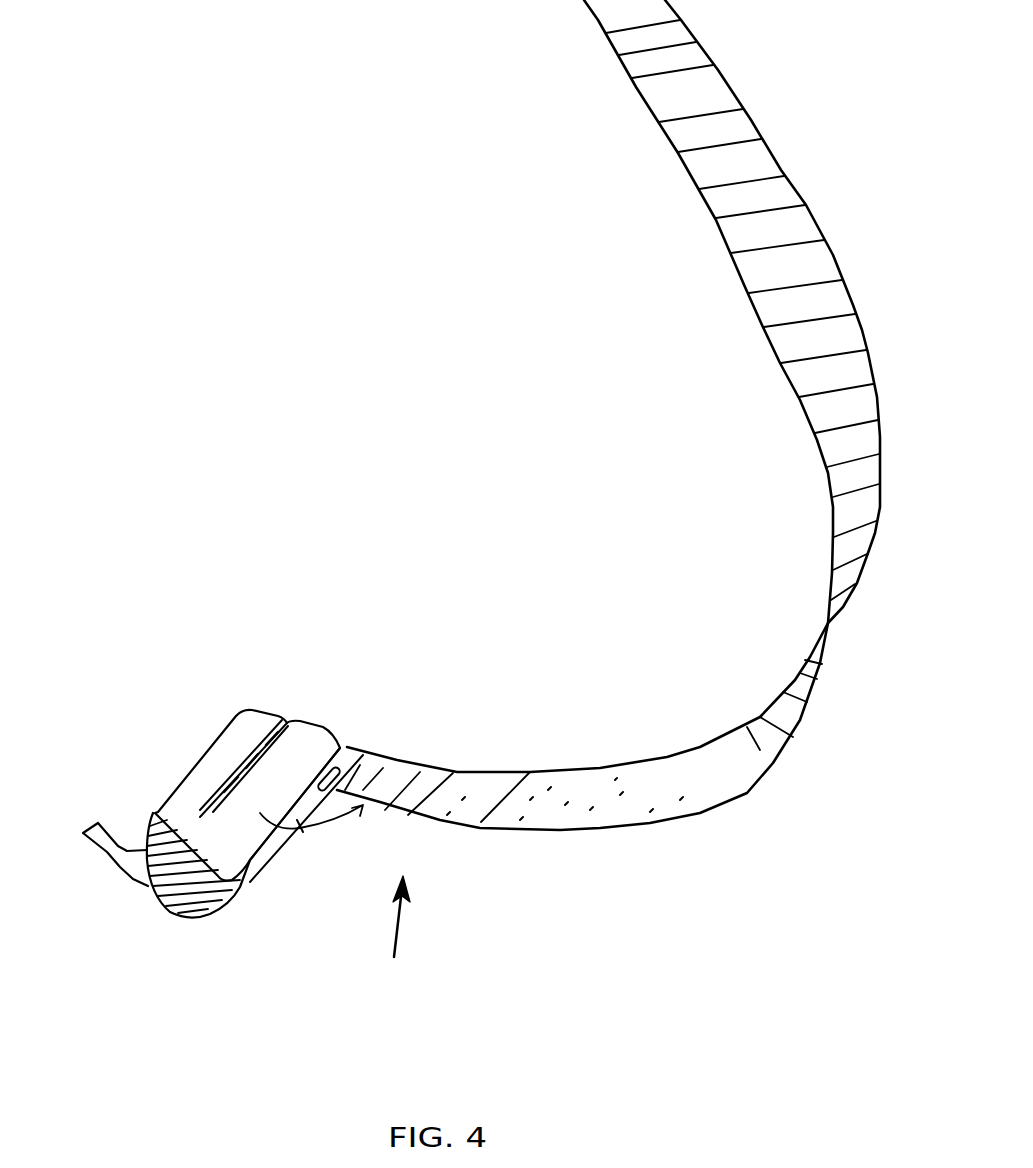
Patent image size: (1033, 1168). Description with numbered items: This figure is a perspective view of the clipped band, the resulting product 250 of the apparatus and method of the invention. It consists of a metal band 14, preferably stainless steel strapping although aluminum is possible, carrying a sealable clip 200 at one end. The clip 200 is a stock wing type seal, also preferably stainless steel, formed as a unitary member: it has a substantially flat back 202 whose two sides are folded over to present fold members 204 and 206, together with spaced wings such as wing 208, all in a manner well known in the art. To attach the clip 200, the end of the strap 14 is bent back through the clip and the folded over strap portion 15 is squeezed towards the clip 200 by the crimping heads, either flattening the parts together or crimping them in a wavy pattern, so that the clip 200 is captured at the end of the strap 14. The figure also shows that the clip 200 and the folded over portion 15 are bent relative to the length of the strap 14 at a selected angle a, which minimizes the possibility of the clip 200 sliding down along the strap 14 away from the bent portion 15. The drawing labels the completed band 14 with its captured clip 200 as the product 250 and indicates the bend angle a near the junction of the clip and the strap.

The band material 14 is at (673, 804).
The clip 200 is at (198, 752).
The flat back 202 is at (322, 723).
The fold member 204 is at (282, 833).
The fold member 206 is at (193, 784).
The wing 208 is at (103, 852).
The folded over strap portion 15 is at (294, 835).
The resulting product 250 is at (396, 939).
The selected angle a is at (311, 825).